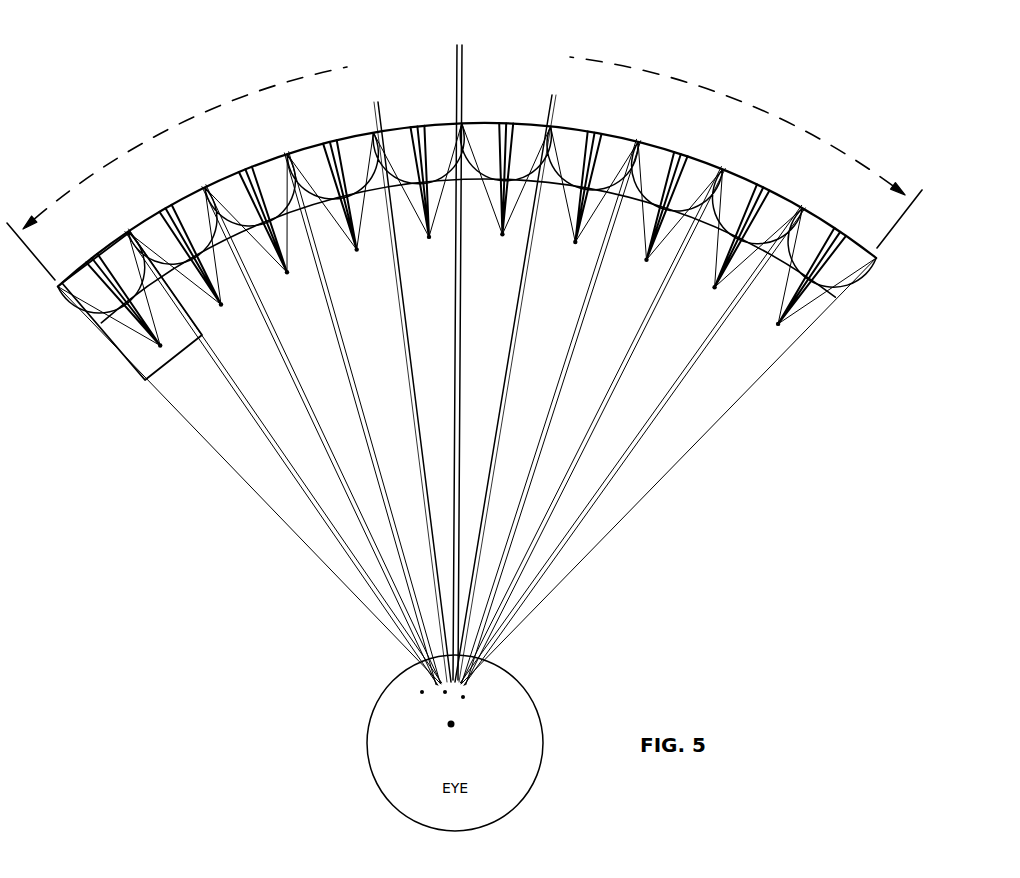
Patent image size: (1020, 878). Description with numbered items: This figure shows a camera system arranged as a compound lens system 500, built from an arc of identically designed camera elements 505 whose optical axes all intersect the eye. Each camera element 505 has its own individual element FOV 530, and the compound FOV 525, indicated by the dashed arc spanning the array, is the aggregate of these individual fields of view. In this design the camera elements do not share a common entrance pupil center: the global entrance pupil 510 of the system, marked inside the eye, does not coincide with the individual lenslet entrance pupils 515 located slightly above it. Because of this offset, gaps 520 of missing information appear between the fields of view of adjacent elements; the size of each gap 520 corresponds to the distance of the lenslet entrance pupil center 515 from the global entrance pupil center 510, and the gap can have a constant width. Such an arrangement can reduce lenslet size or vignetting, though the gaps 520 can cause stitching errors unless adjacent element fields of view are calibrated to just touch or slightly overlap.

The compound lens system 500 is at (96, 93).
The camera element 505 is at (132, 363).
The global entrance pupil 510 is at (446, 731).
The lenslet entrance pupils 515 is at (460, 699).
The gaps 520 is at (500, 52).
The FOV 525 is at (218, 108).
The individual element FOV 530 is at (545, 113).